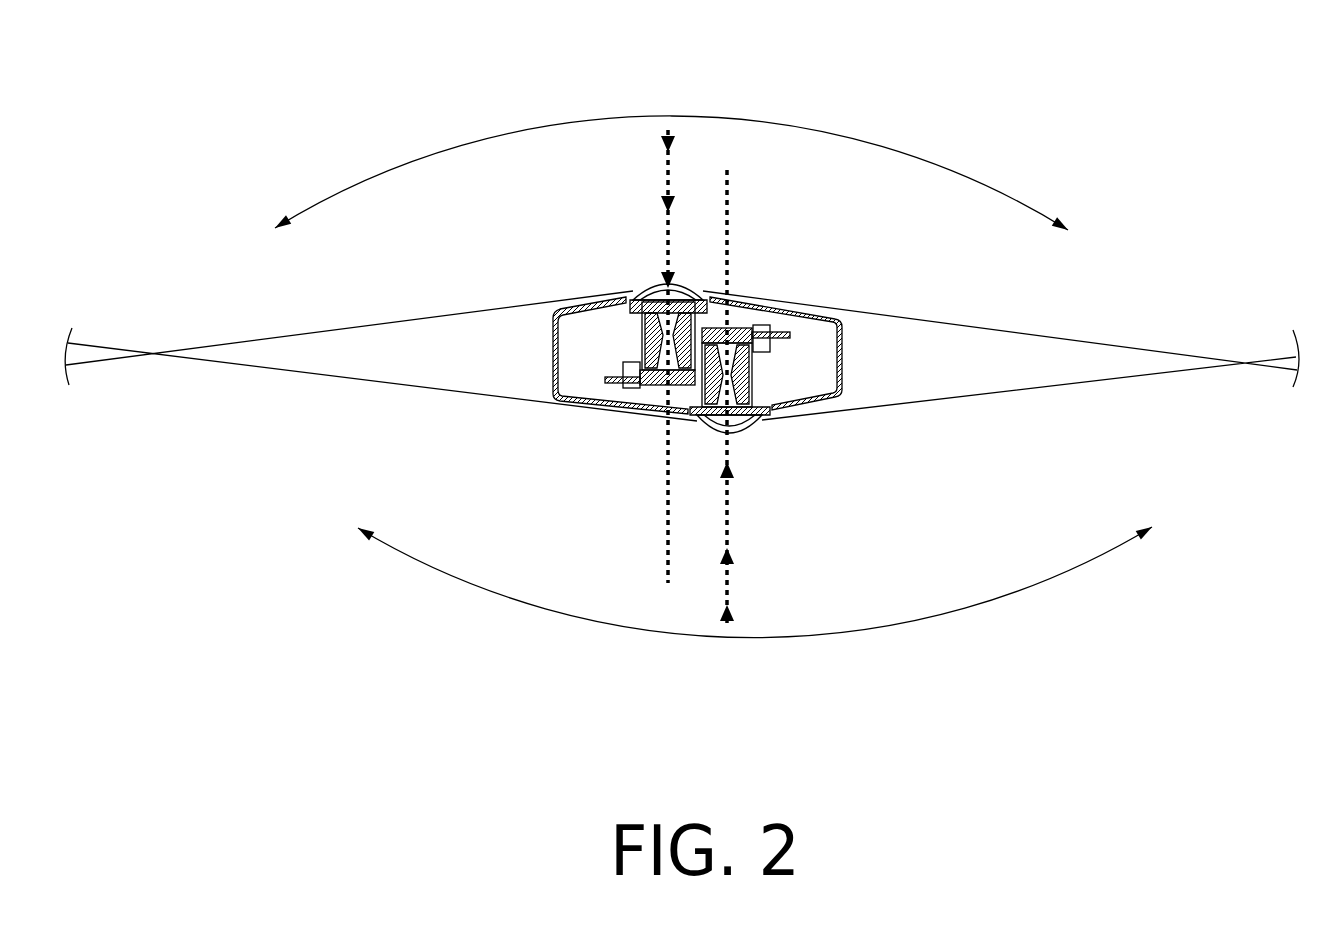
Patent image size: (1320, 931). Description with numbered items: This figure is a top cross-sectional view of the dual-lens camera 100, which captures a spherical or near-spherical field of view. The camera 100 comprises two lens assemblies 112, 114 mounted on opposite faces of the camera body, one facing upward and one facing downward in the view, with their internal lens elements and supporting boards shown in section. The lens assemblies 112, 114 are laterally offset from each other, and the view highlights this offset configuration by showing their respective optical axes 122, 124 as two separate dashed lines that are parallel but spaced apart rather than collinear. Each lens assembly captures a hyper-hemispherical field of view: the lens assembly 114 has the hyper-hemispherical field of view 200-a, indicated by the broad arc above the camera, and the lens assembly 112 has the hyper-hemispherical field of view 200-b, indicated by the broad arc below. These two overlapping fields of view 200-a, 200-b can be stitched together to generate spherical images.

The dual-lens camera 100 is at (530, 294).
The lens assembly 112 is at (760, 428).
The lens assembly 114 is at (655, 290).
The optical axis 122 is at (730, 518).
The optical axis 124 is at (664, 242).
The hyper-hemispherical field of view 200-a is at (743, 116).
The hyper-hemispherical field of view 200-b is at (757, 641).